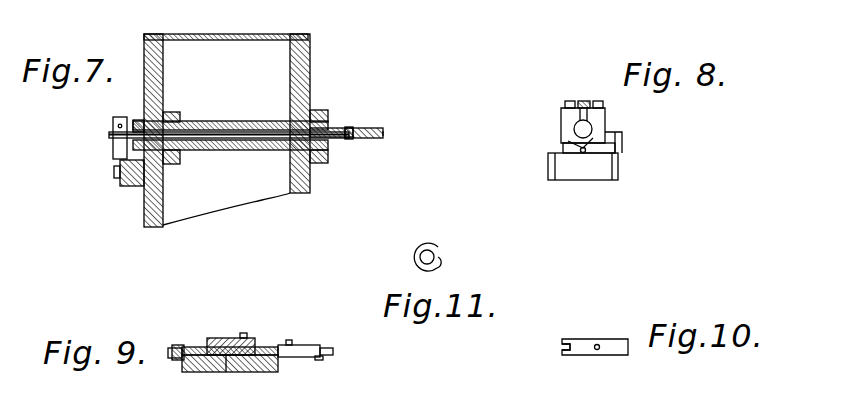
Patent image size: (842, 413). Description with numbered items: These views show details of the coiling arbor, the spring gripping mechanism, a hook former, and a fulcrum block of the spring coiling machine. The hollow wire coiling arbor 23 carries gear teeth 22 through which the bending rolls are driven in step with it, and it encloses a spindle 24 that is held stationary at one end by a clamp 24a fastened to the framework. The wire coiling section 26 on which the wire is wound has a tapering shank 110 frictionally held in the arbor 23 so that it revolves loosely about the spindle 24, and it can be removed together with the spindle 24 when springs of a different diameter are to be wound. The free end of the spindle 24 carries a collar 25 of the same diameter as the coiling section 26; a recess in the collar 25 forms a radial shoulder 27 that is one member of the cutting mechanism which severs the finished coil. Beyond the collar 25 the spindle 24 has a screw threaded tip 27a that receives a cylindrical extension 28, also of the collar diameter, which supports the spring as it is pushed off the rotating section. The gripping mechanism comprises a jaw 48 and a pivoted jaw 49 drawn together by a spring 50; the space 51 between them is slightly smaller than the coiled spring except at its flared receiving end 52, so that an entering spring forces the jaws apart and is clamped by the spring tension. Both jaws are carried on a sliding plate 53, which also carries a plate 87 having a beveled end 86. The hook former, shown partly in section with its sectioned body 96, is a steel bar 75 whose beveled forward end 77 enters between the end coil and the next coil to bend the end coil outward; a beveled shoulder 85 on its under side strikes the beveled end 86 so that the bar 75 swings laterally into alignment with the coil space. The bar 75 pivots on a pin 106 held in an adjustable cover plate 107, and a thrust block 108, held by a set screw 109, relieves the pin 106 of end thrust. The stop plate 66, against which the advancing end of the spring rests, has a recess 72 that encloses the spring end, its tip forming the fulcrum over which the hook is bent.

In FIG. 7, the gear teeth 22 is at (205, 121).
In FIG. 7, the wire coiling arbor 23 is at (261, 150).
In FIG. 7, the spindle 24 is at (246, 133).
In FIG. 7, the clamp 24a is at (116, 126).
In FIG. 7, the collar 25 is at (354, 129).
In FIG. 11, the collar 25 is at (429, 242).
In FIG. 7, the wire coiling section 26 is at (337, 129).
In FIG. 11, the radial shoulder 27 is at (443, 263).
In FIG. 7, the screw threaded tip 27a is at (352, 139).
In FIG. 11, the screw threaded tip 27a is at (422, 262).
In FIG. 7, the cylindrical extension 28 is at (383, 133).
In FIG. 7, the tapering shank 110 is at (320, 154).
In FIG. 8, the jaw 48 is at (612, 131).
In FIG. 8, the jaw 49 is at (565, 117).
In FIG. 8, the spring 50 is at (592, 95).
In FIG. 8, the space 51 is at (600, 121).
In FIG. 8, the flared receiving end 52 is at (572, 133).
In FIG. 8, the sliding plate 53 is at (575, 175).
In FIG. 8, the beveled end 86 is at (623, 150).
In FIG. 8, the plate 87 is at (606, 170).
In FIG. 9, the steel bar 75 is at (305, 345).
In FIG. 9, the beveled forward end 77 is at (330, 351).
In FIG. 9, the beveled shoulder 85 is at (324, 360).
In FIG. 9, the main block 96 is at (195, 372).
In FIG. 9, the pivot pin 106 is at (232, 360).
In FIG. 9, the cover plate 107 is at (227, 343).
In FIG. 9, the thrust block 108 is at (206, 347).
In FIG. 9, the set screw 109 is at (172, 358).
In FIG. 10, the stop plate 66 is at (595, 340).
In FIG. 10, the recess 72 is at (562, 344).